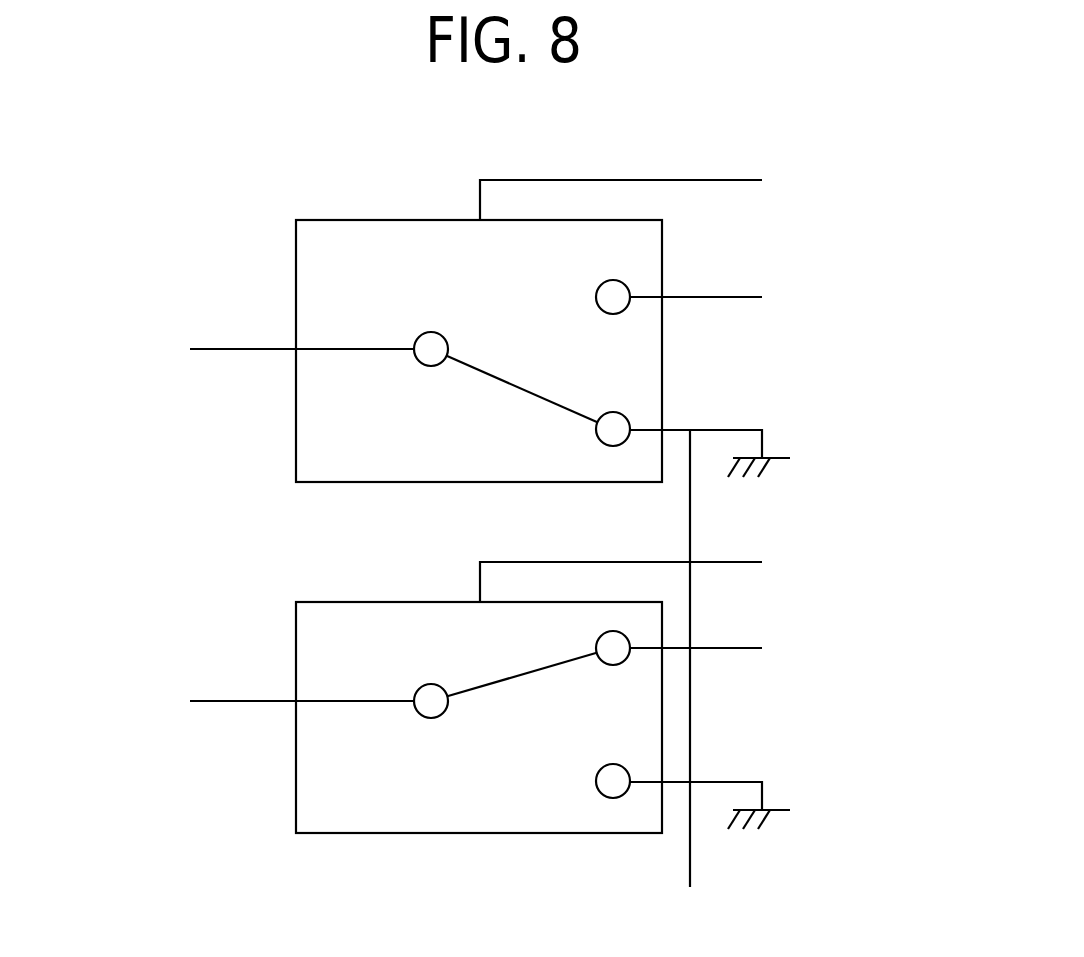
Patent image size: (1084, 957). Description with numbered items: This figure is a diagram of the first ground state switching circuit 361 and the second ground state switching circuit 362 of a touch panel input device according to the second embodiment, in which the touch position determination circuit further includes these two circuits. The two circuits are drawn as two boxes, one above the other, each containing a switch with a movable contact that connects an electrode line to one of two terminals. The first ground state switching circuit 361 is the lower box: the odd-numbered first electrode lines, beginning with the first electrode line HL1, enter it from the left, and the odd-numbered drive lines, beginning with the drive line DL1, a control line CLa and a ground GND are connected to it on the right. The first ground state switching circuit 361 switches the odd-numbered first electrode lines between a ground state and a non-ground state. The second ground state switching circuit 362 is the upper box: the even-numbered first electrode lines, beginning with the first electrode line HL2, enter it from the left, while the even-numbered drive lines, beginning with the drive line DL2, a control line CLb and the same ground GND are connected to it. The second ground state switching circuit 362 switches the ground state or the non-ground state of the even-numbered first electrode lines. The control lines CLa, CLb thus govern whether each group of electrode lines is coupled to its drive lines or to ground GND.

The first ground state switching circuit 361 is at (375, 602).
The second ground state switching circuit 362 is at (375, 220).
The first electrode line HL1 is at (211, 700).
The first electrode line HL2 is at (211, 348).
The drive line DL1 is at (727, 648).
The drive line DL2 is at (727, 297).
The ground GND is at (733, 430).
The control line CLa is at (733, 562).
The control line CLb is at (733, 180).